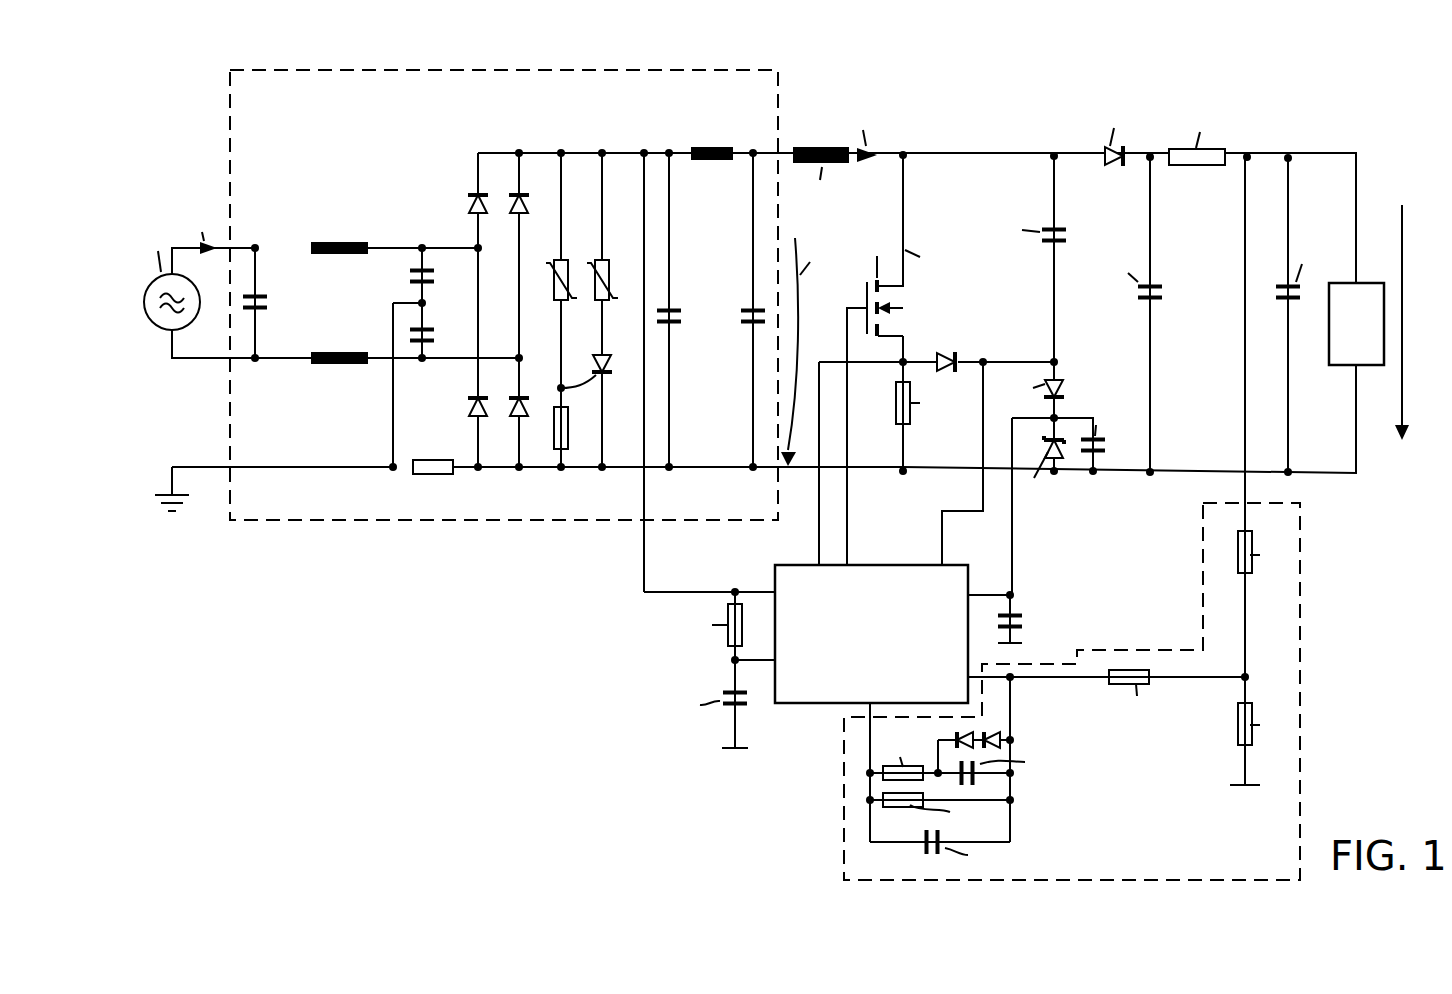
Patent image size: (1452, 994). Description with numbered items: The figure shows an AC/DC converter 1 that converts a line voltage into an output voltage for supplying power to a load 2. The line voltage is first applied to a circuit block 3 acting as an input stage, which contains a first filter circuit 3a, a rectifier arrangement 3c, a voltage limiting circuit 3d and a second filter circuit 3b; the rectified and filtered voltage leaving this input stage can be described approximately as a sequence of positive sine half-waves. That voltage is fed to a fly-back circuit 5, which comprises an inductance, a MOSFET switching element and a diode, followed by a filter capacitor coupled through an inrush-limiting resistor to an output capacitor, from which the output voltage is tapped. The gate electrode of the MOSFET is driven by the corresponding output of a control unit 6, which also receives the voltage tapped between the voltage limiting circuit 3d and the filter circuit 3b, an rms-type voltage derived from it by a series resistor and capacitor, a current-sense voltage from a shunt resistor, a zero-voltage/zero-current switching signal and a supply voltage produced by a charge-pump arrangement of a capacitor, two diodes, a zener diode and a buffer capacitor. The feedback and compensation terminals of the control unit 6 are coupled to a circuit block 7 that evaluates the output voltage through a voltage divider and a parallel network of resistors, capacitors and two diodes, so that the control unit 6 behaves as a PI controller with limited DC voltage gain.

The converter 1 is at (505, 664).
The load 2 is at (1373, 290).
The circuit block 3 is at (228, 105).
The filter circuit 3a is at (346, 226).
The filter circuit 3b is at (709, 146).
The rectifier arrangement 3c is at (498, 150).
The voltage limiting circuit 3d is at (581, 150).
The fly-back circuit 5 is at (988, 152).
The control unit 6 is at (808, 706).
The circuit block 7 is at (1302, 650).